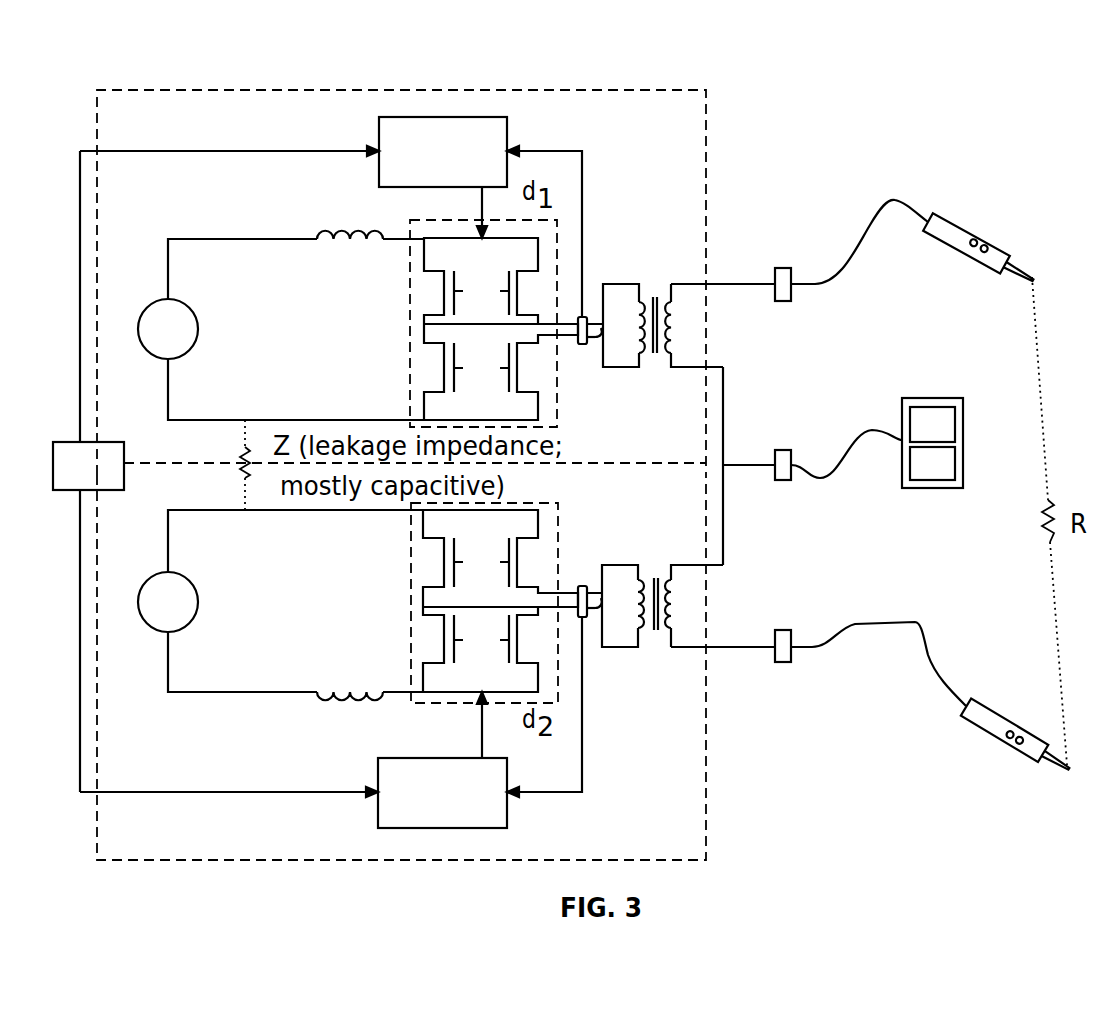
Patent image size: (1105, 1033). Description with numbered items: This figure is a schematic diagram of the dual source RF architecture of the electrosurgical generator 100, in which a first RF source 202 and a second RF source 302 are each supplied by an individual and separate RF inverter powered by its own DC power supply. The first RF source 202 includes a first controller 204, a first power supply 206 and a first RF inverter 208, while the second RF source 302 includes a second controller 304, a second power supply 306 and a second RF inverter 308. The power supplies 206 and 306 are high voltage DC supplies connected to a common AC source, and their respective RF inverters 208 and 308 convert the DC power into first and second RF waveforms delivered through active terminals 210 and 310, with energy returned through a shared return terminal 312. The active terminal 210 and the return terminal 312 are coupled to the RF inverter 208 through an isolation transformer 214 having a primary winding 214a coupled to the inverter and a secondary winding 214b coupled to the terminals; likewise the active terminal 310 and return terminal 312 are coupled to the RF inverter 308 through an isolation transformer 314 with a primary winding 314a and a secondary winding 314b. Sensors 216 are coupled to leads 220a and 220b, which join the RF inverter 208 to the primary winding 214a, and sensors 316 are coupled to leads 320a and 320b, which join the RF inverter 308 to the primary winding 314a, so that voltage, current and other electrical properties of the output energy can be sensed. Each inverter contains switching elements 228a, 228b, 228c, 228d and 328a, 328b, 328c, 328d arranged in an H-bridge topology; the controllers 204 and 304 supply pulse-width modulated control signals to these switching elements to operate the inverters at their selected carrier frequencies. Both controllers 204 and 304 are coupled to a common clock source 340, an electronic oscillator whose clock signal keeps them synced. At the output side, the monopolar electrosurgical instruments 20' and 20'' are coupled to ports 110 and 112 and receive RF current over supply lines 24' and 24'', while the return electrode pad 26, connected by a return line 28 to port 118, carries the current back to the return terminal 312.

The generator 100 is at (489, 76).
The first RF source 202 is at (193, 90).
The first controller 204 is at (463, 166).
The first power supply 206 is at (198, 329).
The first RF inverter 208 is at (412, 316).
The active terminal 210 is at (732, 297).
The isolation transformer 214 is at (700, 335).
The primary winding 214a is at (612, 368).
The secondary winding 214b is at (688, 286).
The sensors 216 is at (600, 322).
The lead 220a is at (583, 284).
The lead 220b is at (600, 345).
The switching element 228a is at (458, 276).
The switching element 228b is at (510, 290).
The switching element 228c is at (458, 358).
The switching element 228d is at (505, 360).
The second RF source 302 is at (193, 861).
The second controller 304 is at (463, 806).
The second power supply 306 is at (198, 602).
The second RF inverter 308 is at (412, 578).
The active terminal 310 is at (730, 650).
The return terminal 312 is at (737, 468).
The isolation transformer 314 is at (699, 614).
The primary winding 314a is at (628, 565).
The secondary winding 314b is at (688, 566).
The sensors 316 is at (597, 603).
The lead 320a is at (600, 592).
The lead 320b is at (565, 600).
The switching element 328a is at (458, 626).
The switching element 328b is at (503, 630).
The switching element 328c is at (458, 546).
The switching element 328d is at (510, 556).
The clock source 340 is at (107, 479).
The port 110 is at (785, 268).
The port 112 is at (781, 662).
The port 118 is at (783, 480).
The monopolar electrosurgical instrument 20' is at (980, 228).
The monopolar electrosurgical instrument 20'' is at (1014, 744).
The supply line 24' is at (860, 208).
The supply line 24'' is at (878, 664).
The return electrode pad 26 is at (963, 410).
The return line 28 is at (870, 430).